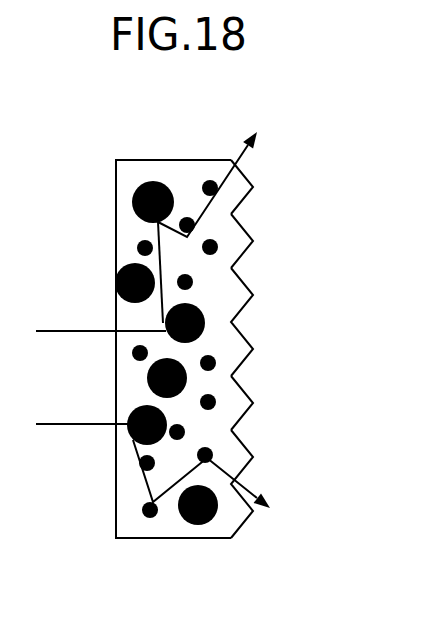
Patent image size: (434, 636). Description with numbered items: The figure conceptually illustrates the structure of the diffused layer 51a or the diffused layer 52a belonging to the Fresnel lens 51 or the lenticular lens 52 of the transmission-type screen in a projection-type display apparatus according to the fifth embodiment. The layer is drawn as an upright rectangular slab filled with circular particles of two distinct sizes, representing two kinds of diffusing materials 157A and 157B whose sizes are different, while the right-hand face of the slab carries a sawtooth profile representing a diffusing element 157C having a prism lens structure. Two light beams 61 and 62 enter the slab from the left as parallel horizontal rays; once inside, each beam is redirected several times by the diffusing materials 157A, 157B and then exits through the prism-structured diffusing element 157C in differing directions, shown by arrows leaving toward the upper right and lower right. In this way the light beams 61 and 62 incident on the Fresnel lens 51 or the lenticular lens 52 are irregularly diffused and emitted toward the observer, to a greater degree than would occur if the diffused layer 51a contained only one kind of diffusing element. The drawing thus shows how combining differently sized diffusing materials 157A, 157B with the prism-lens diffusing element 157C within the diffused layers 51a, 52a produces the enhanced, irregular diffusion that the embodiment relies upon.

The Fresnel lens 51 is at (184, 335).
The lenticular lens 52 is at (176, 131).
The diffused layer 51a is at (173, 563).
The diffused layer 52a is at (173, 530).
The light beam 61 is at (62, 330).
The light beam 62 is at (55, 425).
The diffusing material 157A is at (233, 242).
The diffusing material 157B is at (200, 311).
The diffusing element 157C is at (238, 400).